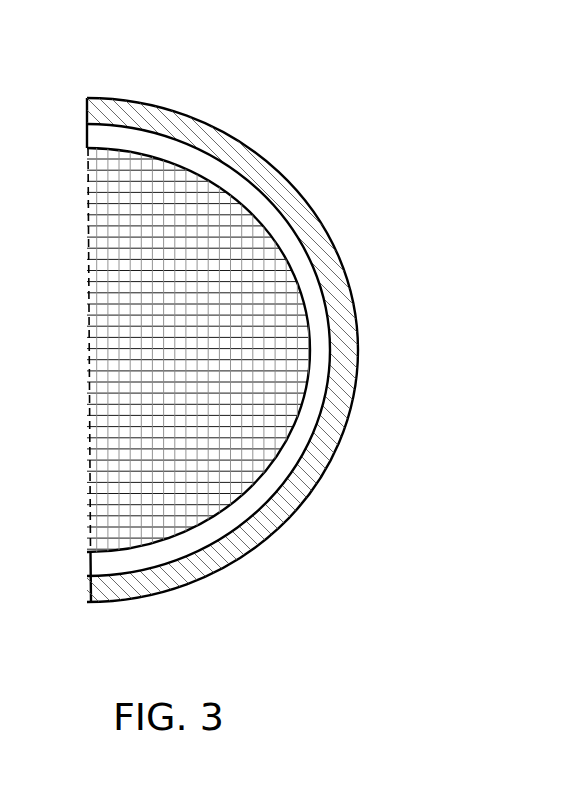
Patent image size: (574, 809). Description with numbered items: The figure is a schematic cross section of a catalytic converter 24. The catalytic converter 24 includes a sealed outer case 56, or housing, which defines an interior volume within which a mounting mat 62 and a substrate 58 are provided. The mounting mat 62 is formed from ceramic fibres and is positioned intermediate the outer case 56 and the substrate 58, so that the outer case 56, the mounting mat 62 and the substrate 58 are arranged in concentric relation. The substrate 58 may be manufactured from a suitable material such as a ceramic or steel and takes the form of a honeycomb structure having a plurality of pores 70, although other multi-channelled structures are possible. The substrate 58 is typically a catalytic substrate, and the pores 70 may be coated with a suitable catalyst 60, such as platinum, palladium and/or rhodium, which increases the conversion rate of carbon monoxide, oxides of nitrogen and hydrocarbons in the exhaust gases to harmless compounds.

The catalytic converter 24 is at (350, 102).
The outer case 56 is at (332, 285).
The mounting mat 62 is at (317, 358).
The substrate 58 is at (247, 428).
The catalyst 60 is at (247, 468).
The pores 70 is at (203, 190).